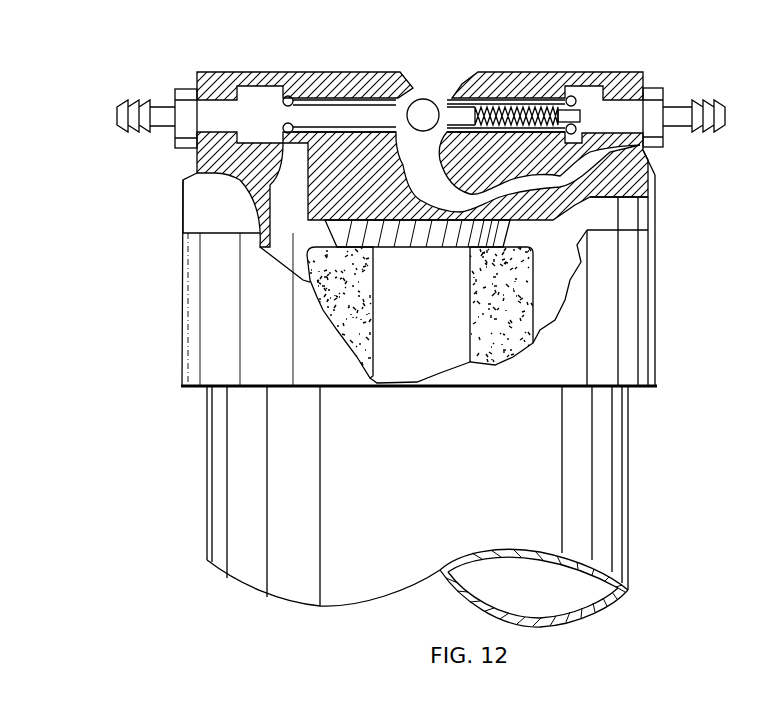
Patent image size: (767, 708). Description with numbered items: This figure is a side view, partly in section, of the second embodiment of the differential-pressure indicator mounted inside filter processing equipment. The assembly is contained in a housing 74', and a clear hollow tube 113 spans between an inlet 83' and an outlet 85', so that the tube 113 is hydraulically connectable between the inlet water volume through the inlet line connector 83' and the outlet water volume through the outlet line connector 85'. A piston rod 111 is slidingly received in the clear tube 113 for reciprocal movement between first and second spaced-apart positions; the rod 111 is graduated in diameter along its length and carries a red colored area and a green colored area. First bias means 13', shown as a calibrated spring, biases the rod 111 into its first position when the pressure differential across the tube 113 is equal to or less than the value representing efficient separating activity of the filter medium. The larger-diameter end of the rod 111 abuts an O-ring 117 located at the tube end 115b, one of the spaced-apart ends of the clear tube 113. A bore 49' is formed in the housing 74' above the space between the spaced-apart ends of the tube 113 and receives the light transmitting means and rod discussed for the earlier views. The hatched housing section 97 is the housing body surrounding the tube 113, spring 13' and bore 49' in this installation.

The piston rod 111 is at (357, 80).
The clear hollow tube 113 is at (307, 76).
The O-ring 117 is at (278, 80).
The bore 49' is at (412, 84).
The first bias means 13' is at (502, 65).
The spring retainer plug 97 is at (542, 80).
The inlet line connector 83' is at (125, 136).
The outlet line connector 85' is at (713, 137).
The spaced-apart end of clear tube 115b is at (256, 176).
The housing 74' is at (369, 507).